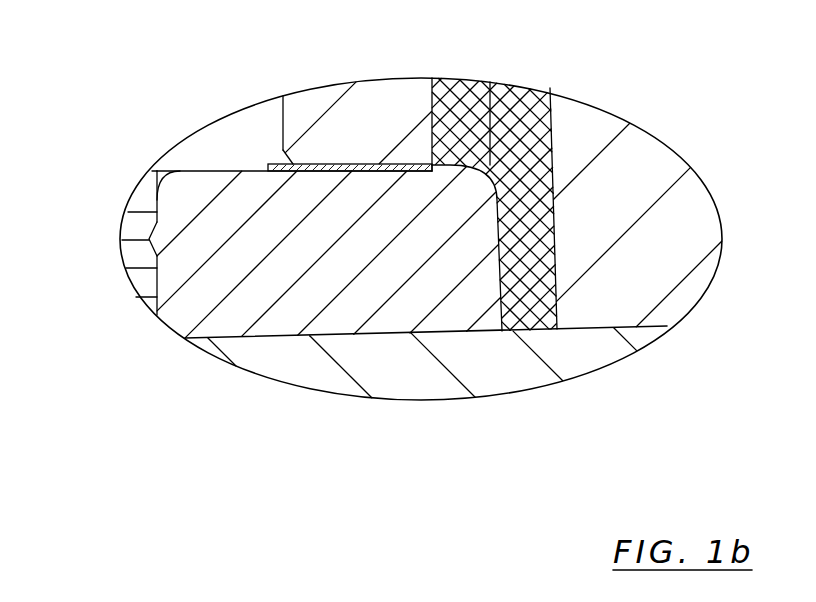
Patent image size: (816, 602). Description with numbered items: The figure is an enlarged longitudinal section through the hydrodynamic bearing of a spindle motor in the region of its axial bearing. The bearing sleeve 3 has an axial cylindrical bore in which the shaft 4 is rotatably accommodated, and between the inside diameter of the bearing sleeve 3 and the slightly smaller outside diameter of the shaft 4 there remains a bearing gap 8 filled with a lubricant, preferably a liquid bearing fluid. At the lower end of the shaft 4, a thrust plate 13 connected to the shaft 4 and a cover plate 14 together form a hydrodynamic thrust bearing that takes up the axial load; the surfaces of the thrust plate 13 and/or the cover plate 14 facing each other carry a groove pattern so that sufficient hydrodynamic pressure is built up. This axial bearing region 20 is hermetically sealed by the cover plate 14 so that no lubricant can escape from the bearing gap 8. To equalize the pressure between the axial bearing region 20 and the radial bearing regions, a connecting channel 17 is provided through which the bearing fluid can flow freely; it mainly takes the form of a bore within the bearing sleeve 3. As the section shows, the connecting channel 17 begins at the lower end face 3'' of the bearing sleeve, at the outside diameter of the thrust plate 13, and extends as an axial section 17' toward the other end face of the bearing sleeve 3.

The bearing sleeve 3 is at (421, 208).
The lower end face of the bearing sleeve 3'' is at (624, 159).
The shaft 4 is at (133, 258).
The bearing gap 8 is at (281, 106).
The thrust plate 13 is at (352, 322).
The cover plate 14 is at (523, 373).
The connecting channel 17 is at (636, 209).
The axial section of the connecting channel 17' is at (519, 125).
The axial bearing region 20 is at (442, 340).